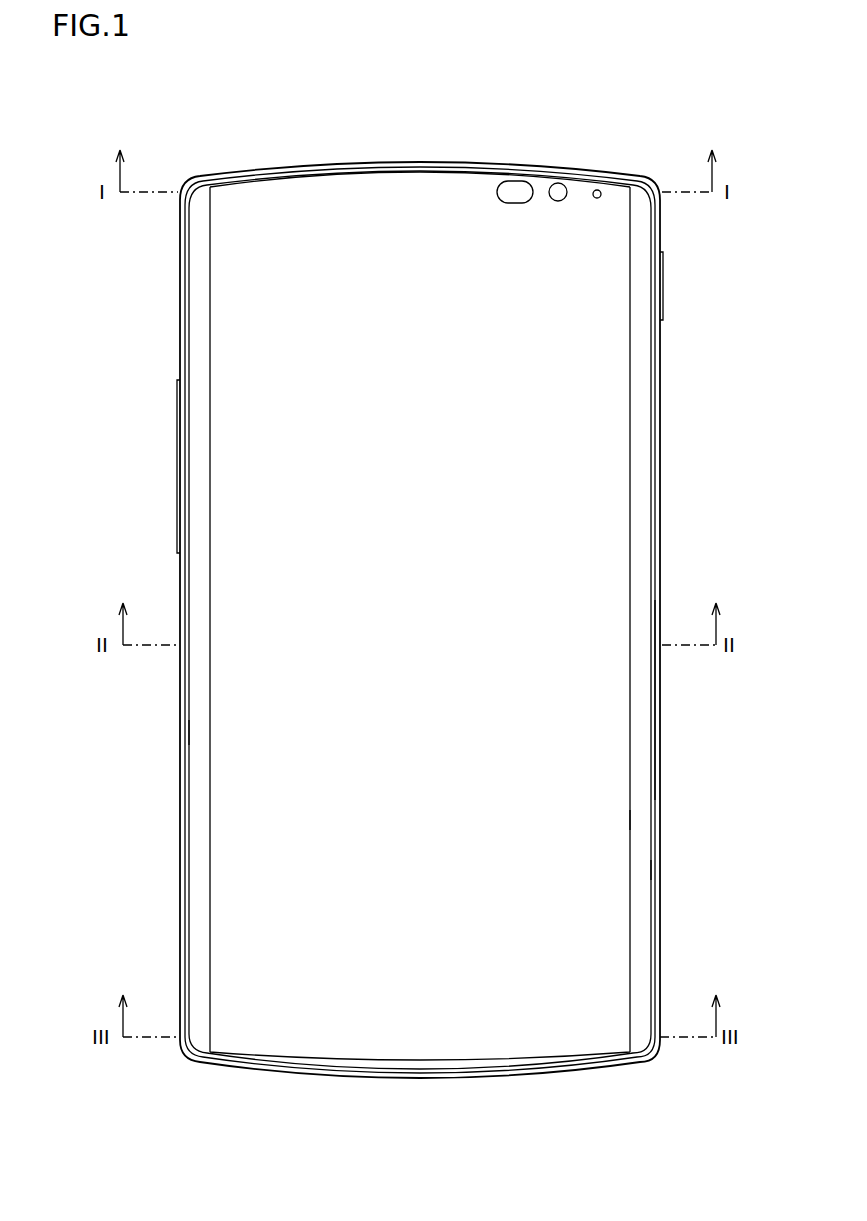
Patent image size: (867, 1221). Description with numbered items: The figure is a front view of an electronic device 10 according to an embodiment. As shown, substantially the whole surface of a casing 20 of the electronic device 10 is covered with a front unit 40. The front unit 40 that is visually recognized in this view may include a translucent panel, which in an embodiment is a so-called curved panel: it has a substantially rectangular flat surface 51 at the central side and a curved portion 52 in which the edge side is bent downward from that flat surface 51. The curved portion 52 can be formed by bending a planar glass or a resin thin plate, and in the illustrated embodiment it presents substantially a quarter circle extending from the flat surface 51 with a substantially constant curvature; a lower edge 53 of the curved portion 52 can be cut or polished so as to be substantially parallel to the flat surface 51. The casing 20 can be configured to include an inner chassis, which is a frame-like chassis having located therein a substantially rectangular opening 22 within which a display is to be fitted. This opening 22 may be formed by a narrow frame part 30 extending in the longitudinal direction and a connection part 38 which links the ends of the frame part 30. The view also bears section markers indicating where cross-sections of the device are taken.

The electronic device 10 is at (645, 134).
The casing 20 is at (660, 396).
The opening 22 is at (652, 568).
The frame part 30 is at (657, 728).
The connection part 38 is at (522, 160).
The front unit 40 is at (537, 500).
The flat surface 51 is at (578, 827).
The curved portion 52 is at (638, 871).
The lower edge 53 is at (741, 801).